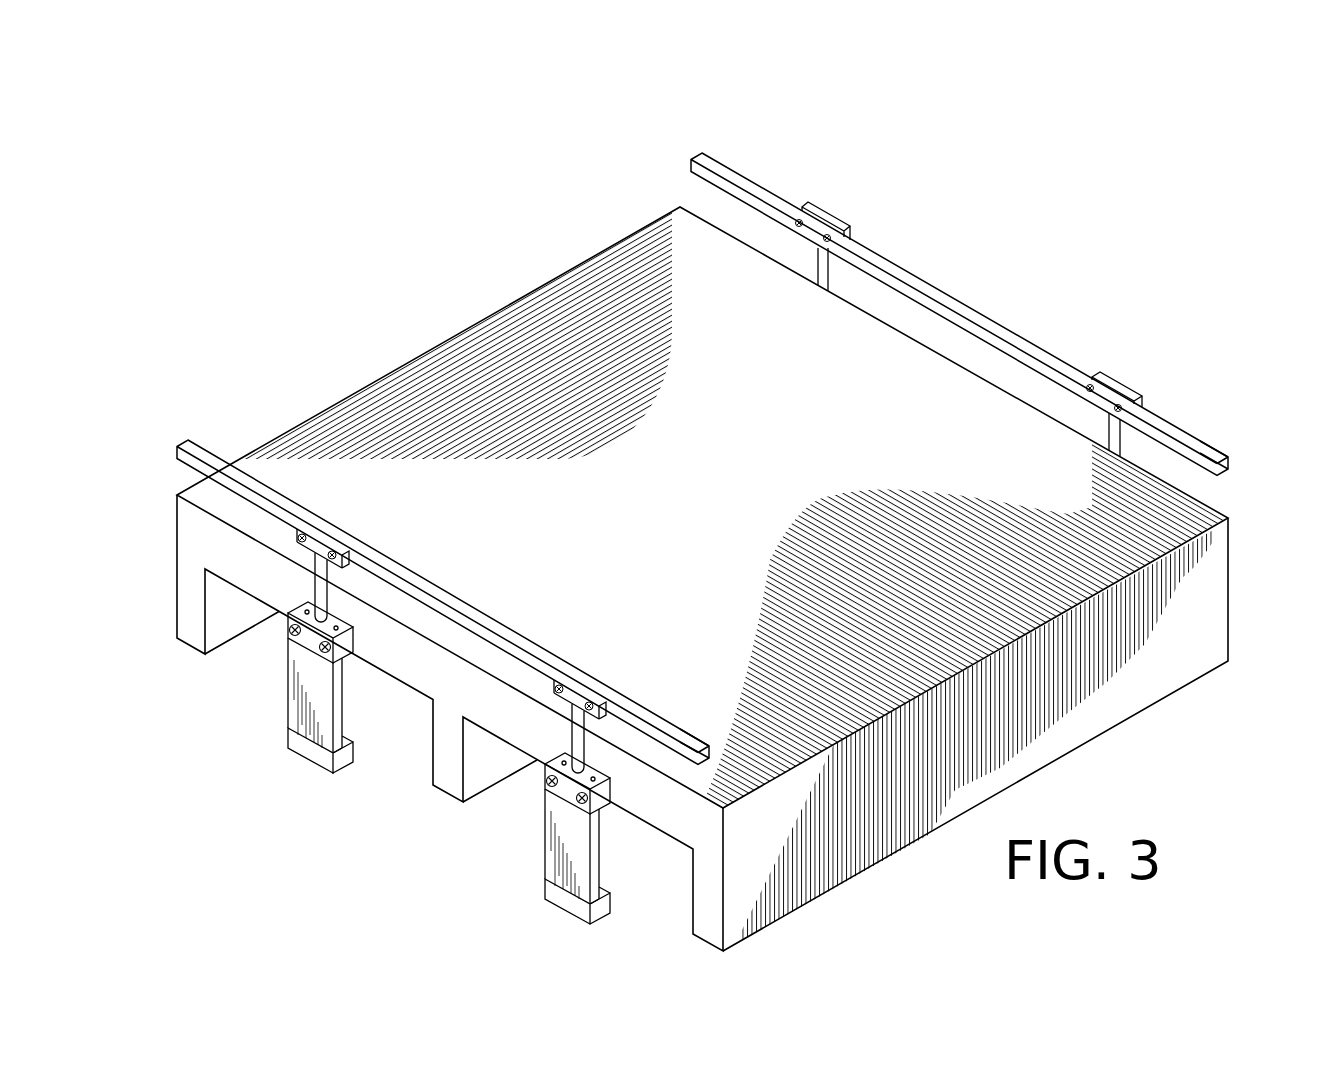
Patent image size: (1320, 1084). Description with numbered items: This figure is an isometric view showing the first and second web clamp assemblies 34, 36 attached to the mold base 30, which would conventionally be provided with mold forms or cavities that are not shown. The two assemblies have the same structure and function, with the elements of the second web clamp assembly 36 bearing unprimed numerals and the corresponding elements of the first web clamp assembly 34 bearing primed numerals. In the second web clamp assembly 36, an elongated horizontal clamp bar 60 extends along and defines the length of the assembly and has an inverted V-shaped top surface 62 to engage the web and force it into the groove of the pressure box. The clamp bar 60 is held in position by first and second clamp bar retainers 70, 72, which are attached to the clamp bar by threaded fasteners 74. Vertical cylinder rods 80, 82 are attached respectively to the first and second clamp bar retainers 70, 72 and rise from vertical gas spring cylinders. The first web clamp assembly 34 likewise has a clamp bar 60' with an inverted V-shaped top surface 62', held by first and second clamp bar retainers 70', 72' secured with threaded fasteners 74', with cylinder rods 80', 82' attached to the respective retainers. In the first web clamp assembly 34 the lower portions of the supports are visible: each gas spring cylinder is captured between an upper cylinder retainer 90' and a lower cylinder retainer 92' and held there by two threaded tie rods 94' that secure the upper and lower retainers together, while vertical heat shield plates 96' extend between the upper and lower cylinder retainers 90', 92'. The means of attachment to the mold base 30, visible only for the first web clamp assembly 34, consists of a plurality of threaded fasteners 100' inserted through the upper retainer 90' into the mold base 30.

The mold base 30 is at (422, 393).
The first web clamp assembly 34 is at (344, 833).
The second web clamp assembly 36 is at (1091, 268).
The clamp bar 60 is at (959, 314).
The inverted V-shaped top surface 62 is at (1229, 433).
The first clamp bar retainer 70 is at (849, 200).
The second clamp bar retainer 72 is at (1140, 369).
The threaded fasteners 74 is at (912, 333).
The cylinder rod 80 is at (868, 247).
The cylinder rod 82 is at (1160, 415).
The clamp bar 60' is at (443, 602).
The inverted V-shaped top surface 62' is at (711, 723).
The first clamp bar retainer 70' is at (306, 566).
The second clamp bar retainer 72' is at (564, 715).
The threaded fasteners 74' is at (475, 593).
The cylinder rod 80' is at (377, 568).
The cylinder rod 82' is at (635, 717).
The upper cylinder retainer 90' is at (481, 709).
The lower cylinder retainer 92' is at (442, 845).
The threaded tie rods 94' is at (478, 771).
The heat shield plates 96' is at (400, 781).
The threaded fasteners 100' is at (404, 734).